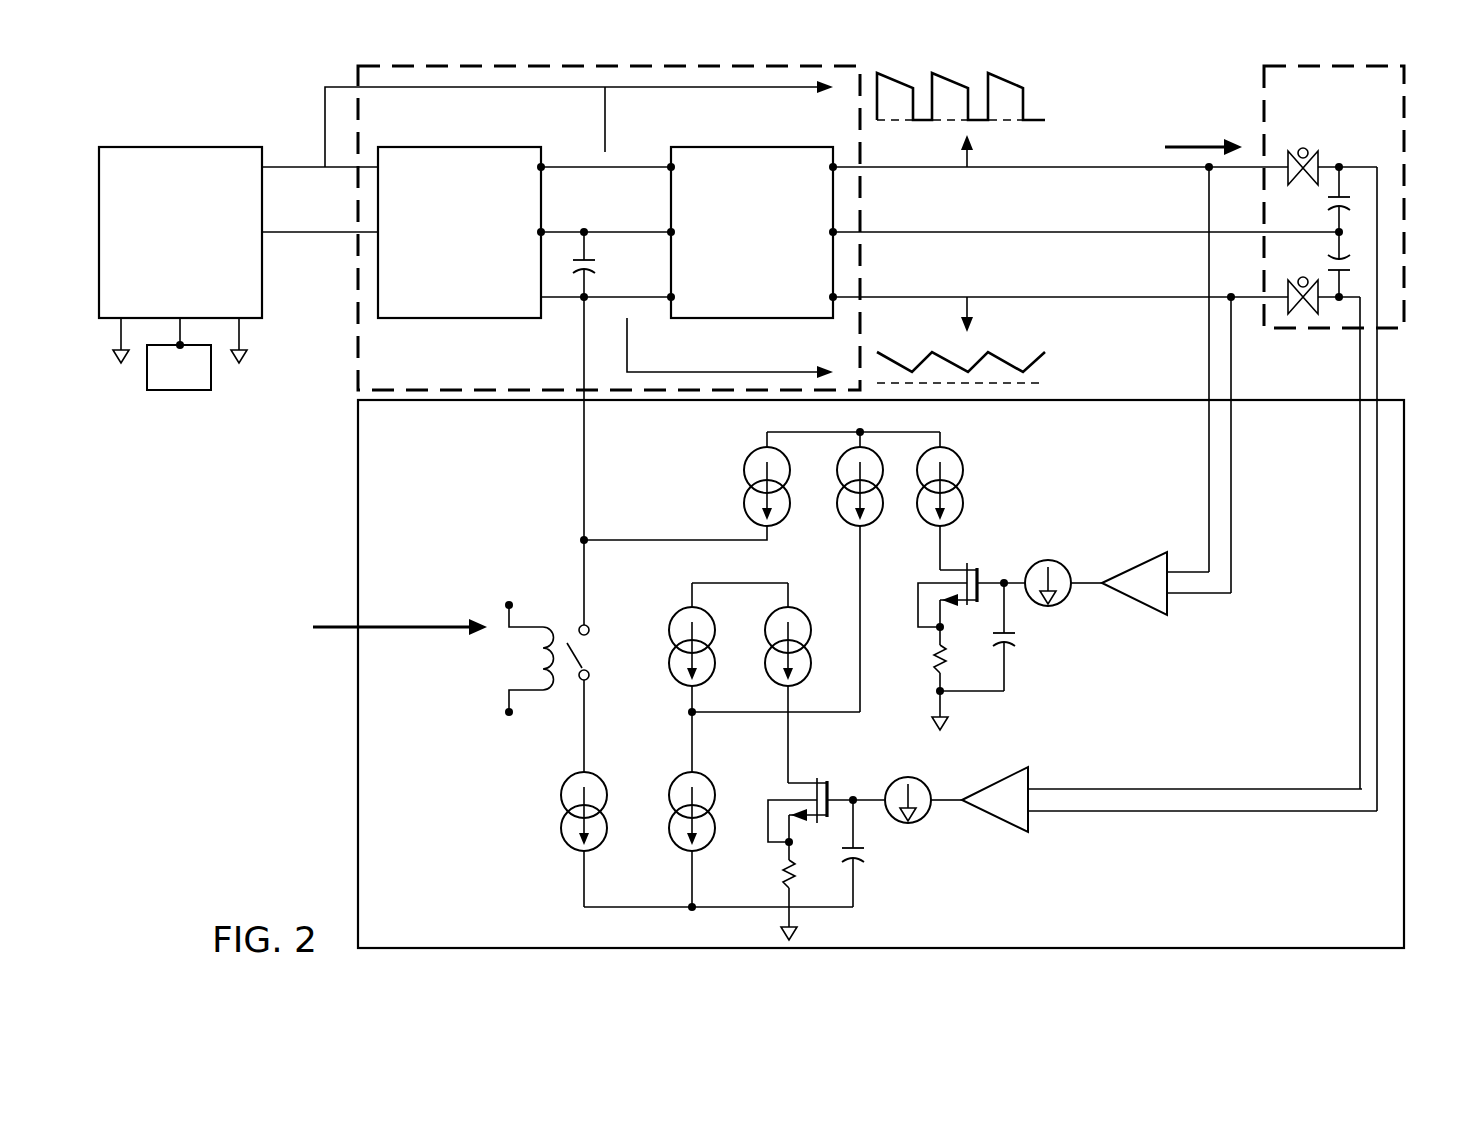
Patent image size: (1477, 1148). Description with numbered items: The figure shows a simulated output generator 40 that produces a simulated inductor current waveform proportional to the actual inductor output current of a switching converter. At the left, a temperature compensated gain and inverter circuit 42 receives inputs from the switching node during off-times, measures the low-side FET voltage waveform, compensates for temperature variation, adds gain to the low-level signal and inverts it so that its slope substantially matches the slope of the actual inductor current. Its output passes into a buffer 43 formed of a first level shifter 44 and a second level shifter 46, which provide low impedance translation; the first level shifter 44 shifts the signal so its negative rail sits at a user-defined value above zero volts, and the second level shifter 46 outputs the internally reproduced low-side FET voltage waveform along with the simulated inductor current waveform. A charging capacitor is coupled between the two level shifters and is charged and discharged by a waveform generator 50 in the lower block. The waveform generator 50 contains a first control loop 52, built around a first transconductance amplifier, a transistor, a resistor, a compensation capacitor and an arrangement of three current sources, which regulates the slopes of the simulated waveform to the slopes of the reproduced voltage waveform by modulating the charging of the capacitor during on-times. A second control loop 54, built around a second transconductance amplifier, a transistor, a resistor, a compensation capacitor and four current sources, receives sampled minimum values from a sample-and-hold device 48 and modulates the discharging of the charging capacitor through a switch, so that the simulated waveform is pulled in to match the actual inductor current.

The simulated output generator 40 is at (178, 625).
The temperature compensated gain and inverter circuit 42 is at (262, 282).
The buffer 43 is at (350, 332).
The first level shifter 44 is at (463, 146).
The second level shifter 46 is at (754, 146).
The sample-and-hold device 48 is at (1412, 196).
The waveform generator 50 is at (350, 466).
The first control loop 52 is at (672, 466).
The second control loop 54 is at (1122, 892).